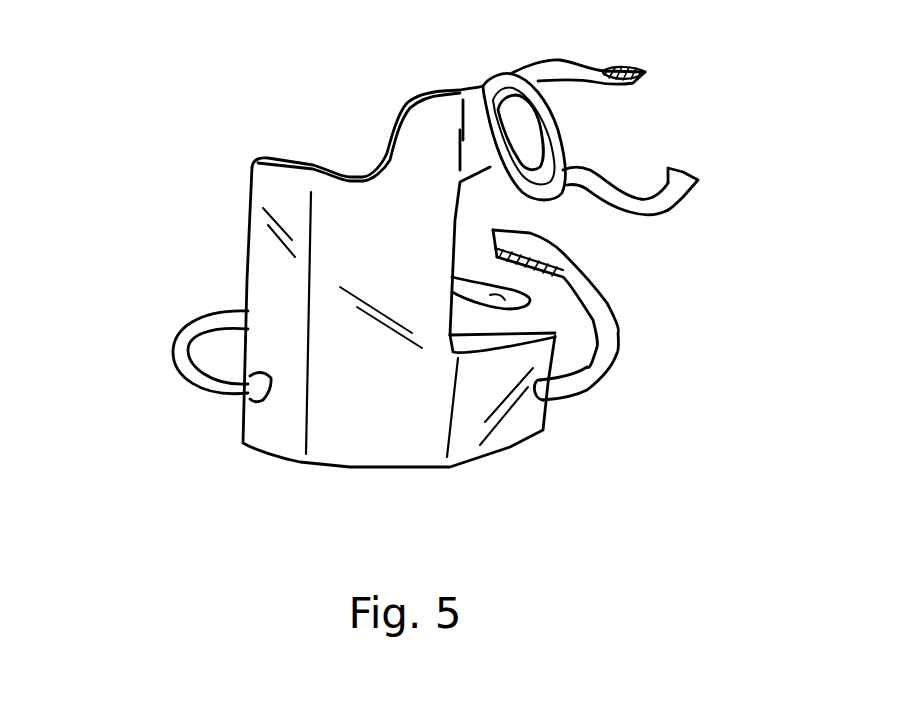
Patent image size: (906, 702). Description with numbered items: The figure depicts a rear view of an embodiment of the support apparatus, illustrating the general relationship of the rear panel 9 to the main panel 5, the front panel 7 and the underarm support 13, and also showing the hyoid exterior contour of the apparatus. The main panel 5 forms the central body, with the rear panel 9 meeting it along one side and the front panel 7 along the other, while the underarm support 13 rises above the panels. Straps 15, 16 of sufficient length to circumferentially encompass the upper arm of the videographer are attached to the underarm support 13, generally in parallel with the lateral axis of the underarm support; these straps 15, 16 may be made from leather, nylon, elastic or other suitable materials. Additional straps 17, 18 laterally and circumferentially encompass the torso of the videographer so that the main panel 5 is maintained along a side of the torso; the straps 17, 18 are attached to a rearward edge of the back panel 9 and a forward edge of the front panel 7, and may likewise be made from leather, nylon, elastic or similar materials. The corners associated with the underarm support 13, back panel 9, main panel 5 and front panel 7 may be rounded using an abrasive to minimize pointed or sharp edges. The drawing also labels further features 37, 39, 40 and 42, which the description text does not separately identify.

The main panel 5 is at (347, 425).
The front panel 7 is at (522, 418).
The rear panel 9 is at (277, 298).
The underarm support 13 is at (487, 80).
The strap 15 is at (680, 212).
The strap 16 is at (590, 73).
The additional strap 17 is at (173, 363).
The additional strap 18 is at (622, 335).
The tongue 37 is at (502, 292).
The hatched strap portion 39 is at (550, 250).
The hatched strap tip 40 is at (633, 70).
The lower strap 42 is at (663, 181).